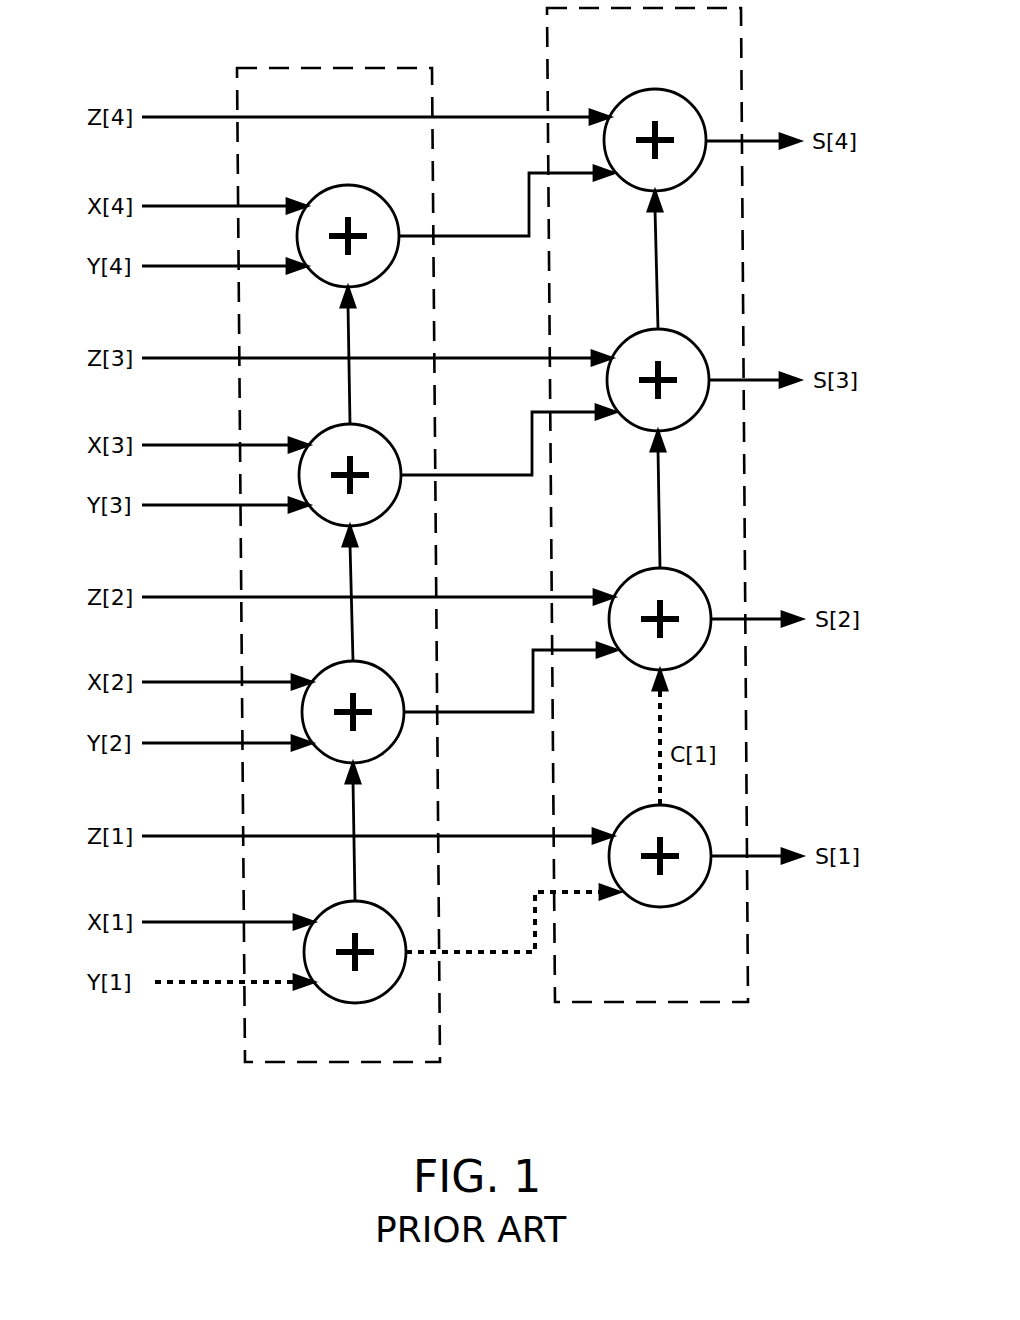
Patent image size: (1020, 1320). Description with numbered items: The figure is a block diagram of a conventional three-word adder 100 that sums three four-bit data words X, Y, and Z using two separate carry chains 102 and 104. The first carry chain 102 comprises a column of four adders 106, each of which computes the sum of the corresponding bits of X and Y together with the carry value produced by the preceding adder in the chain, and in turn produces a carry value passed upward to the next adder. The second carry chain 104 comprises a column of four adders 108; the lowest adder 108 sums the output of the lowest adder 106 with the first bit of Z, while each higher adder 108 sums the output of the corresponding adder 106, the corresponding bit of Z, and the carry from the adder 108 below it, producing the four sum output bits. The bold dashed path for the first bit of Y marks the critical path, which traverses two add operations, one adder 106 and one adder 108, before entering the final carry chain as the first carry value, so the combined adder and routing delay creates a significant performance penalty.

The three-word adder 100 is at (198, 1138).
The carry chain 102 is at (328, 1062).
The carry chain 104 is at (625, 1002).
The adders 106 is at (377, 278).
The adders 108 is at (670, 189).